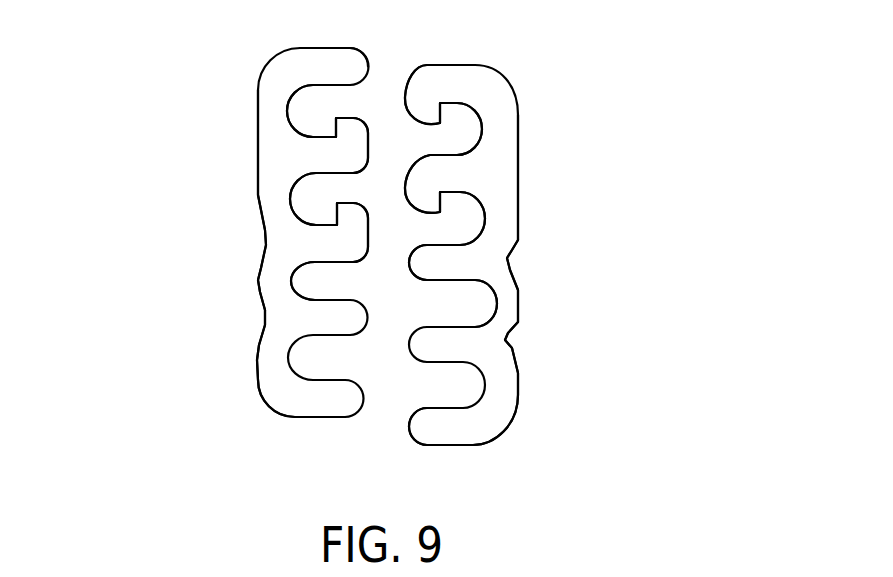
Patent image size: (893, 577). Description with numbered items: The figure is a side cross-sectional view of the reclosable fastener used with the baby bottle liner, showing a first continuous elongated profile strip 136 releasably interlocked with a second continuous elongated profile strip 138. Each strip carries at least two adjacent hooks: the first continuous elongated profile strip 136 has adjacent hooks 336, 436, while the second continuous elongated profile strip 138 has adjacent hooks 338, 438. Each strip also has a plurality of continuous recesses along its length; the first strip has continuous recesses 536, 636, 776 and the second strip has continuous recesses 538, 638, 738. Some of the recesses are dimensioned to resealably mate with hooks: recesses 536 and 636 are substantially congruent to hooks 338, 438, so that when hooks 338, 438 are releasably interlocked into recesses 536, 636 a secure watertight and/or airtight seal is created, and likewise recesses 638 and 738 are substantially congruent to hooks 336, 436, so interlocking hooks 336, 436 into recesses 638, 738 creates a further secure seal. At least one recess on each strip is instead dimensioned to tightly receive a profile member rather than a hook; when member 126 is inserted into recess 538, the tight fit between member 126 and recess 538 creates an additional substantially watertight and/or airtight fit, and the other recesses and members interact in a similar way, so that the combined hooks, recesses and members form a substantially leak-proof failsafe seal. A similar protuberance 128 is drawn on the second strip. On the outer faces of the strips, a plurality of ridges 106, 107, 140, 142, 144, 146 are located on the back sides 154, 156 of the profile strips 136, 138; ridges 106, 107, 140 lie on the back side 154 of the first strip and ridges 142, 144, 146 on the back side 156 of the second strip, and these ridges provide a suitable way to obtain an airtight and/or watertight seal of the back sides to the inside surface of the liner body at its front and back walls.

The ridge 106 is at (258, 183).
The ridge 107 is at (258, 283).
The member 126 is at (345, 54).
The projection of second member 128 is at (433, 267).
The first continuous elongated profile strip 136 is at (224, 373).
The second continuous elongated profile strip 138 is at (643, 458).
The ridge 140 is at (258, 352).
The ridge 142 is at (518, 232).
The ridge 144 is at (512, 280).
The ridge 146 is at (518, 395).
The back side 154 is at (283, 410).
The back side 156 is at (486, 440).
The hook 336 is at (355, 152).
The hook 436 is at (350, 240).
The continuous recess 536 is at (308, 107).
The continuous recess 636 is at (303, 200).
The continuous recess 776 is at (302, 285).
The hook 338 is at (423, 93).
The hook 438 is at (428, 175).
The continuous recess 638 is at (467, 128).
The continuous recess 738 is at (473, 218).
The continuous recess 538 is at (473, 298).